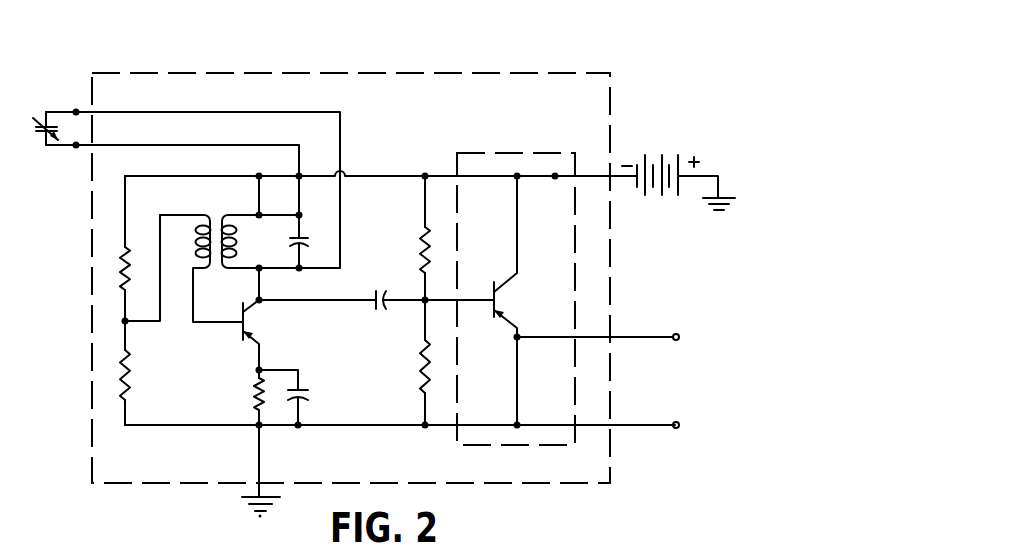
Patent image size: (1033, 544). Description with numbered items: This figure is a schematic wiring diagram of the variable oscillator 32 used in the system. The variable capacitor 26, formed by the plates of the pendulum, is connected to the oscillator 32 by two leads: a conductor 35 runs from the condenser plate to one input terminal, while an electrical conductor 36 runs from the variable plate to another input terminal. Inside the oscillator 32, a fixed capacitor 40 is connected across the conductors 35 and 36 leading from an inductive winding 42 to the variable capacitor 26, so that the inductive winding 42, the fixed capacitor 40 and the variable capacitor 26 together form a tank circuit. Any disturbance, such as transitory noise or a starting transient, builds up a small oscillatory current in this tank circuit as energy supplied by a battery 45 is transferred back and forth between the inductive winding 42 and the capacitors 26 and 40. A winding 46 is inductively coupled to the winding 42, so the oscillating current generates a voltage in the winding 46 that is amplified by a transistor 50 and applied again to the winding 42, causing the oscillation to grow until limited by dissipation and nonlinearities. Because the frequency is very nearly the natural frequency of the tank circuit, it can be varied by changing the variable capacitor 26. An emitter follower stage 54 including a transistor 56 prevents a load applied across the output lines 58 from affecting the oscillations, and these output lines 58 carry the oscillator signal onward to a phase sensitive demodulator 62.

The variable capacitor 26 is at (41, 138).
The variable oscillator 32 is at (289, 70).
The conductor 35 is at (162, 112).
The electrical conductor 36 is at (166, 145).
The fixed capacitor 40 is at (303, 244).
The inductive winding 42 is at (239, 244).
The battery 45 is at (657, 150).
The winding 46 is at (197, 240).
The transistor 50 is at (236, 328).
The emitter follower stage 54 is at (506, 148).
The transistor 56 is at (500, 322).
The output lines 58 is at (645, 338).
The phase sensitive demodulator 62 is at (489, 543).